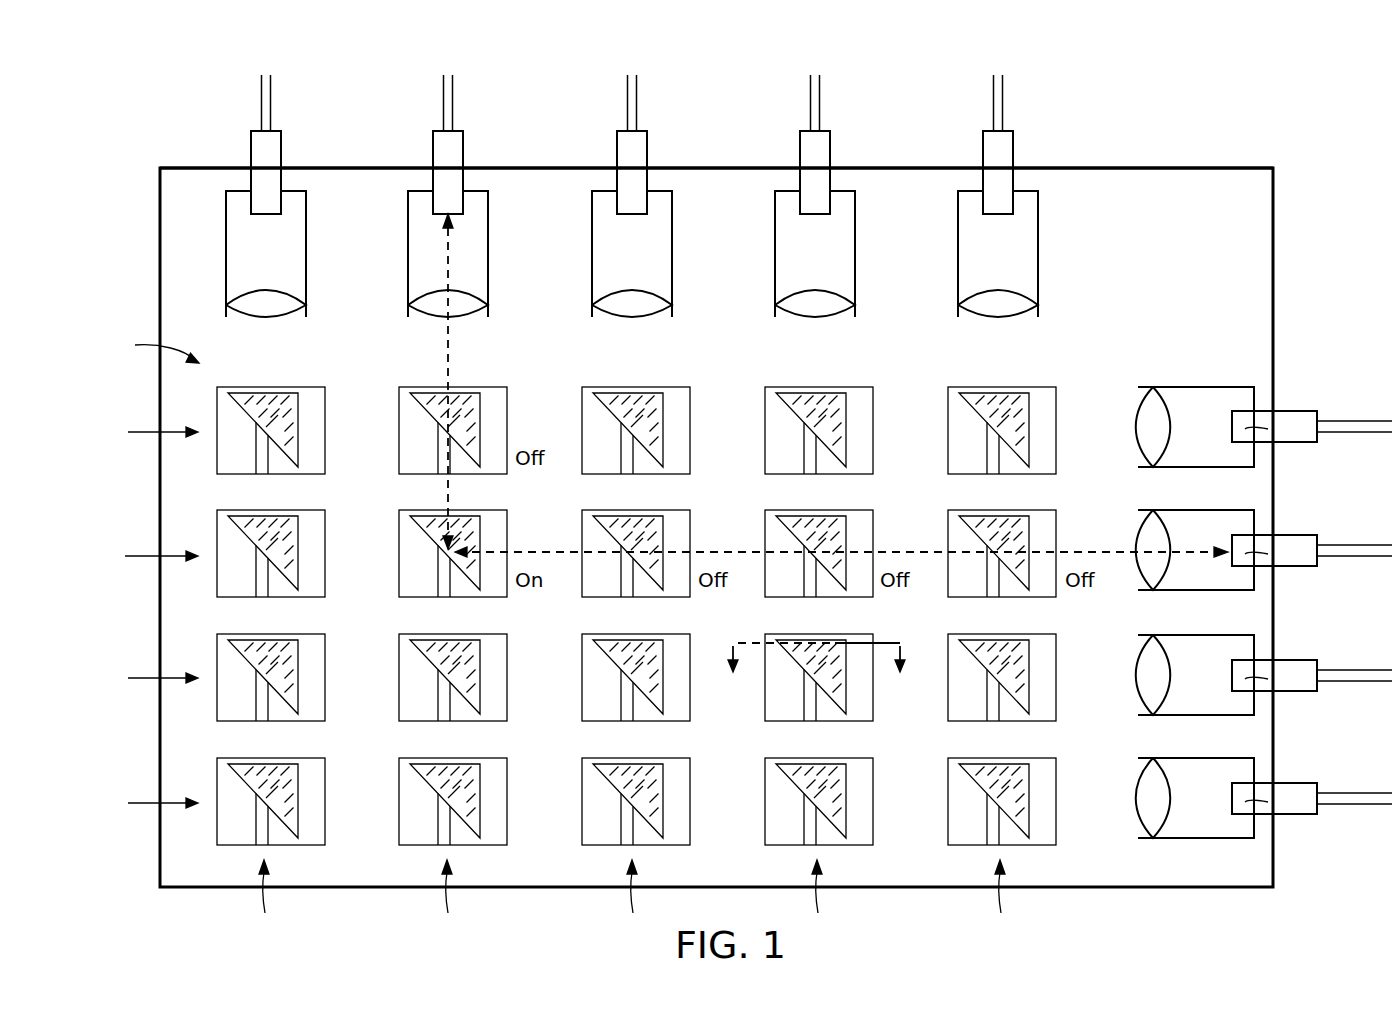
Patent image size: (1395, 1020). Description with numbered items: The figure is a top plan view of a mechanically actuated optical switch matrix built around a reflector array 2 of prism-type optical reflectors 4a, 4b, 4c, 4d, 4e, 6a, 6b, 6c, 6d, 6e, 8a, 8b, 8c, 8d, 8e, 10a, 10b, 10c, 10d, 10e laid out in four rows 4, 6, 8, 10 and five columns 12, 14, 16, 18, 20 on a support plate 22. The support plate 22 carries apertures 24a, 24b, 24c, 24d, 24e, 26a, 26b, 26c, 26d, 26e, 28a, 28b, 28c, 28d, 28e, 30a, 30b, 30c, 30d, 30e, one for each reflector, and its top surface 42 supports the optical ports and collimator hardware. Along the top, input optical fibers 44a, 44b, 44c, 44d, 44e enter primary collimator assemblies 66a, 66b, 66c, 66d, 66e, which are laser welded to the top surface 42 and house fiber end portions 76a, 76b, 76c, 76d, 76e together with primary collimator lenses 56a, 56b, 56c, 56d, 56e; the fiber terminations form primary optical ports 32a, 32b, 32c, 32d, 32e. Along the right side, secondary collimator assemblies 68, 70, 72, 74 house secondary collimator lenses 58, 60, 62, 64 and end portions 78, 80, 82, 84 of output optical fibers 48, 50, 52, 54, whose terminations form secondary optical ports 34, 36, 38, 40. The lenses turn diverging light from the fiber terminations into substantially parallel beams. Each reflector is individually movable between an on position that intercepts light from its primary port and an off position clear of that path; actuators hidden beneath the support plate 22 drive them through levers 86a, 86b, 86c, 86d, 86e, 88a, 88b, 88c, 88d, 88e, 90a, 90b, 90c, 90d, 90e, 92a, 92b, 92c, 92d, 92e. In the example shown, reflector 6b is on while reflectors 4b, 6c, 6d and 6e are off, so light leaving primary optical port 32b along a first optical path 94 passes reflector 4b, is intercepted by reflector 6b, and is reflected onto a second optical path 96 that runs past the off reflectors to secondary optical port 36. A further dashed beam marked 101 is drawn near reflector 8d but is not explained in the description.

The reflector array 2 is at (158, 351).
The row of optical reflectors 4 is at (154, 436).
The row of optical reflectors 6 is at (152, 561).
The row of optical reflectors 8 is at (154, 679).
The row of optical reflectors 10 is at (149, 806).
The column of optical reflectors 12 is at (264, 902).
The column of optical reflectors 14 is at (448, 902).
The column of optical reflectors 16 is at (634, 902).
The column of optical reflectors 18 is at (817, 902).
The column of optical reflectors 20 is at (1000, 902).
The support plate 22 is at (1250, 272).
The top surface 42 is at (1170, 180).
The optical reflector 4a is at (259, 414).
The optical reflector 4b is at (463, 413).
The optical reflector 4c is at (624, 414).
The optical reflector 4d is at (807, 414).
The optical reflector 4e is at (990, 414).
The optical reflector 6a is at (259, 537).
The optical reflector 6b is at (432, 536).
The optical reflector 6c is at (624, 538).
The optical reflector 6d is at (807, 538).
The optical reflector 6e is at (990, 538).
The optical reflector 8a is at (259, 661).
The optical reflector 8b is at (441, 661).
The optical reflector 8c is at (624, 661).
The optical reflector 8d is at (807, 661).
The optical reflector 8e is at (990, 661).
The optical reflector 10a is at (253, 785).
The optical reflector 10b is at (435, 785).
The optical reflector 10c is at (618, 785).
The optical reflector 10d is at (801, 785).
The optical reflector 10e is at (984, 785).
The aperture 24a is at (292, 430).
The aperture 24b is at (474, 430).
The aperture 24c is at (656, 430).
The aperture 24d is at (840, 430).
The aperture 24e is at (1023, 430).
The aperture 26a is at (292, 553).
The aperture 26b is at (480, 547).
The aperture 26c is at (657, 551).
The aperture 26d is at (841, 551).
The aperture 26e is at (1023, 539).
The aperture 28a is at (292, 677).
The aperture 28b is at (474, 677).
The aperture 28c is at (658, 664).
The aperture 28d is at (840, 692).
The aperture 28e is at (1024, 677).
The aperture 30a is at (292, 801).
The aperture 30b is at (474, 801).
The aperture 30c is at (656, 801).
The aperture 30d is at (840, 801).
The aperture 30e is at (1024, 801).
The lever 86a is at (220, 448).
The lever 86b is at (402, 448).
The lever 86c is at (585, 459).
The lever 86d is at (768, 448).
The lever 86e is at (951, 448).
The lever 88a is at (220, 571).
The lever 88b is at (402, 571).
The lever 88c is at (585, 583).
The lever 88d is at (839, 584).
The lever 88e is at (950, 582).
The lever 90a is at (220, 695).
The lever 90b is at (402, 695).
The lever 90c is at (585, 695).
The lever 90d is at (764, 701).
The lever 90e is at (1020, 710).
The lever 92a is at (220, 819).
The lever 92b is at (402, 819).
The lever 92c is at (585, 819).
The lever 92d is at (768, 819).
The lever 92e is at (951, 819).
The input optical fiber 44a is at (235, 103).
The input optical fiber 44b is at (417, 103).
The input optical fiber 44c is at (601, 103).
The input optical fiber 44d is at (784, 103).
The input optical fiber 44e is at (967, 103).
The end portion of input optical fiber 76a is at (235, 172).
The end portion of input optical fiber 76b is at (417, 172).
The end portion of input optical fiber 76c is at (601, 172).
The end portion of input optical fiber 76d is at (784, 172).
The end portion of input optical fiber 76e is at (967, 172).
The primary collimator assembly 66a is at (236, 254).
The primary collimator assembly 66b is at (418, 254).
The primary collimator assembly 66c is at (602, 254).
The primary collimator assembly 66d is at (785, 254).
The primary collimator assembly 66e is at (968, 254).
The primary optical port 32a is at (273, 237).
The primary optical port 32b is at (487, 242).
The primary optical port 32c is at (638, 237).
The primary optical port 32d is at (822, 237).
The primary optical port 32e is at (1005, 237).
The primary collimator lens 56a is at (271, 320).
The primary collimator lens 56b is at (460, 321).
The primary collimator lens 56c is at (636, 320).
The primary collimator lens 56d is at (820, 320).
The primary collimator lens 56e is at (1003, 320).
The first optical path 94 is at (446, 358).
The second optical path 96 is at (523, 552).
The deflected light beam 101 is at (820, 674).
The secondary collimator assembly 68 is at (1196, 413).
The secondary collimator assembly 70 is at (1196, 534).
The secondary collimator assembly 72 is at (1196, 664).
The secondary collimator assembly 74 is at (1196, 785).
The secondary collimator lens 58 is at (1139, 424).
The secondary collimator lens 60 is at (1138, 545).
The secondary collimator lens 62 is at (1137, 675).
The secondary collimator lens 64 is at (1138, 798).
The secondary optical port 34 is at (1253, 426).
The secondary optical port 36 is at (1251, 542).
The secondary optical port 38 is at (1250, 676).
The secondary optical port 40 is at (1249, 798).
The end portion of output optical fiber 78 is at (1286, 404).
The end portion of output optical fiber 80 is at (1286, 529).
The end portion of output optical fiber 82 is at (1286, 654).
The end portion of output optical fiber 84 is at (1286, 779).
The output optical fiber 48 is at (1354, 399).
The output optical fiber 50 is at (1354, 530).
The output optical fiber 52 is at (1354, 652).
The output optical fiber 54 is at (1354, 780).